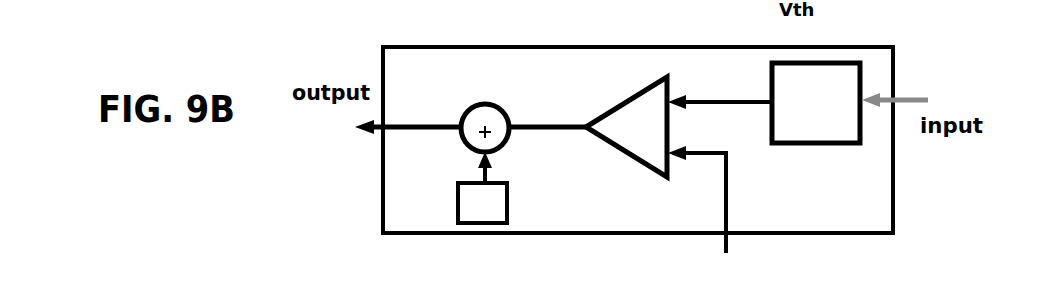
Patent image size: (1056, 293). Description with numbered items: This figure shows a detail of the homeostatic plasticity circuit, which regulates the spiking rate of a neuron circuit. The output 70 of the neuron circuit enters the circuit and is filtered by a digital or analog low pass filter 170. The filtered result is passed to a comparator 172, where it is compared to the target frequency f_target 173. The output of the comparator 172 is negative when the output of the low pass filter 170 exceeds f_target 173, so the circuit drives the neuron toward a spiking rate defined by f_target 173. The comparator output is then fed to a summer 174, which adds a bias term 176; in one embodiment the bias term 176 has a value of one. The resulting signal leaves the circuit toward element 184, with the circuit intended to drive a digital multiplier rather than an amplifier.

The output 70 is at (898, 97).
The low pass filter 170 is at (837, 77).
The comparator 172 is at (630, 113).
The f_target 173 is at (726, 253).
The summer 174 is at (488, 117).
The bias term 176 is at (472, 202).
The output block 184 is at (482, 292).